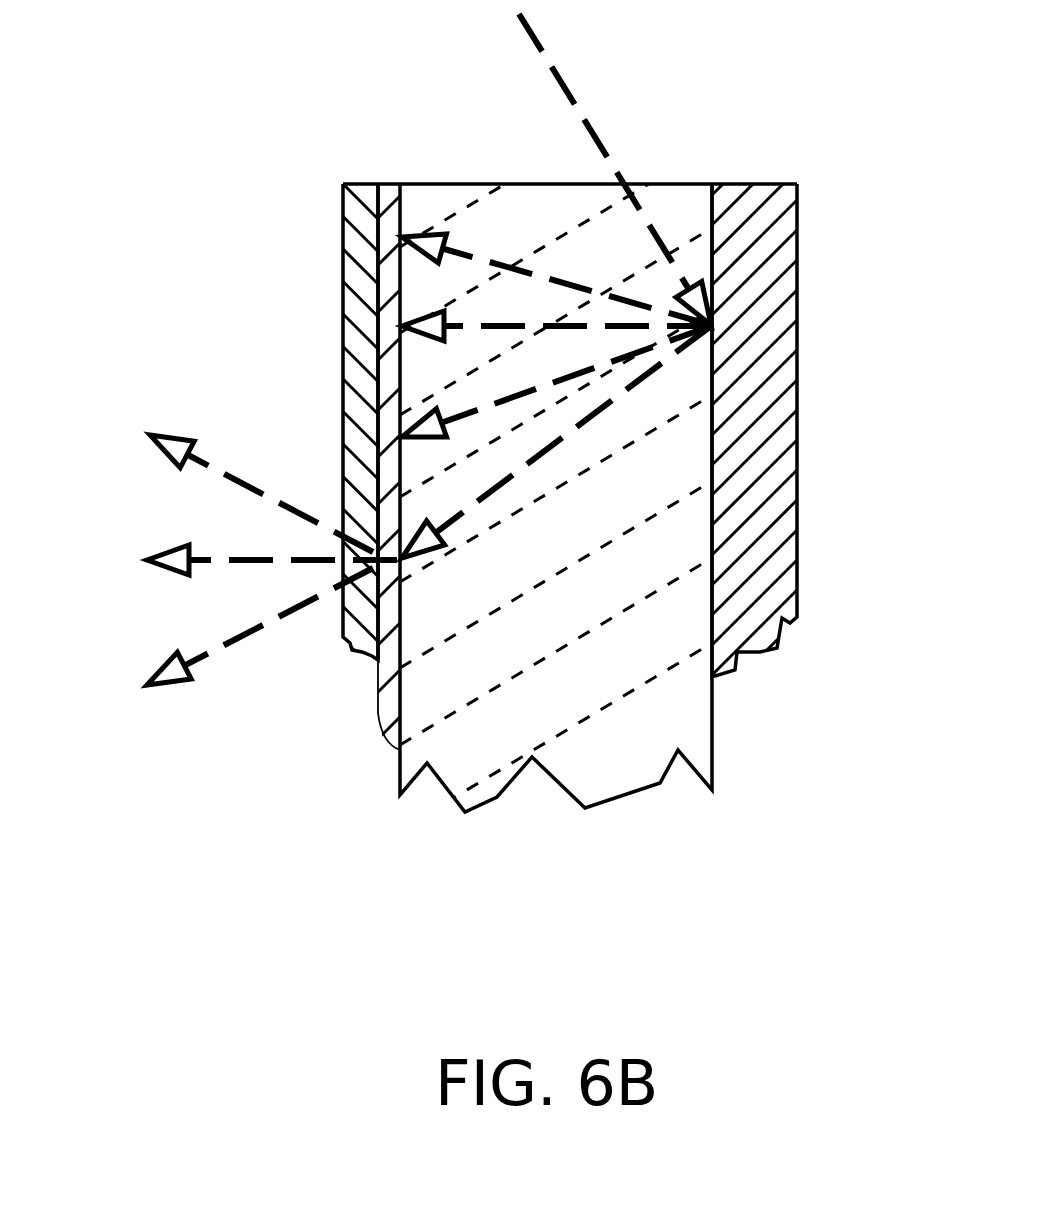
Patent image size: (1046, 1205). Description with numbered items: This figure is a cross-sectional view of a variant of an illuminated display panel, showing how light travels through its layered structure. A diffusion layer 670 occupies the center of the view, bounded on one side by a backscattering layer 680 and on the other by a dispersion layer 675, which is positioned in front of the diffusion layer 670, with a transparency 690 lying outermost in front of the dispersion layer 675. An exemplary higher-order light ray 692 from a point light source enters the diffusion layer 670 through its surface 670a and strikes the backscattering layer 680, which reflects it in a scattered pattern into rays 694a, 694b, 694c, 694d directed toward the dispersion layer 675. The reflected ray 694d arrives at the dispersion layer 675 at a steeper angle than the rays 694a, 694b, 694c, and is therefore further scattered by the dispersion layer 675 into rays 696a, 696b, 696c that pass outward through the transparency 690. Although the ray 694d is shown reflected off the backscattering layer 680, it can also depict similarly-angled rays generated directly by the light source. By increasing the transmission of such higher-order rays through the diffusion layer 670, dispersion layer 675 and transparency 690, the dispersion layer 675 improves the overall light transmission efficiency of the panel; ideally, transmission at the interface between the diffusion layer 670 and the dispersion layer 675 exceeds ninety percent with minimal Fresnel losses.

The diffusion layer 670 is at (713, 757).
The surface 670a is at (523, 183).
The dispersion layer 675 is at (390, 183).
The backscattering layer 680 is at (797, 217).
The transparency 690 is at (357, 183).
The higher-order light ray 692 is at (605, 148).
The reflected ray 694a is at (458, 273).
The reflected ray 694b is at (488, 323).
The reflected ray 694c is at (505, 400).
The reflected ray 694d is at (515, 478).
The scattered ray 696a is at (250, 488).
The scattered ray 696b is at (270, 562).
The scattered ray 696c is at (260, 623).